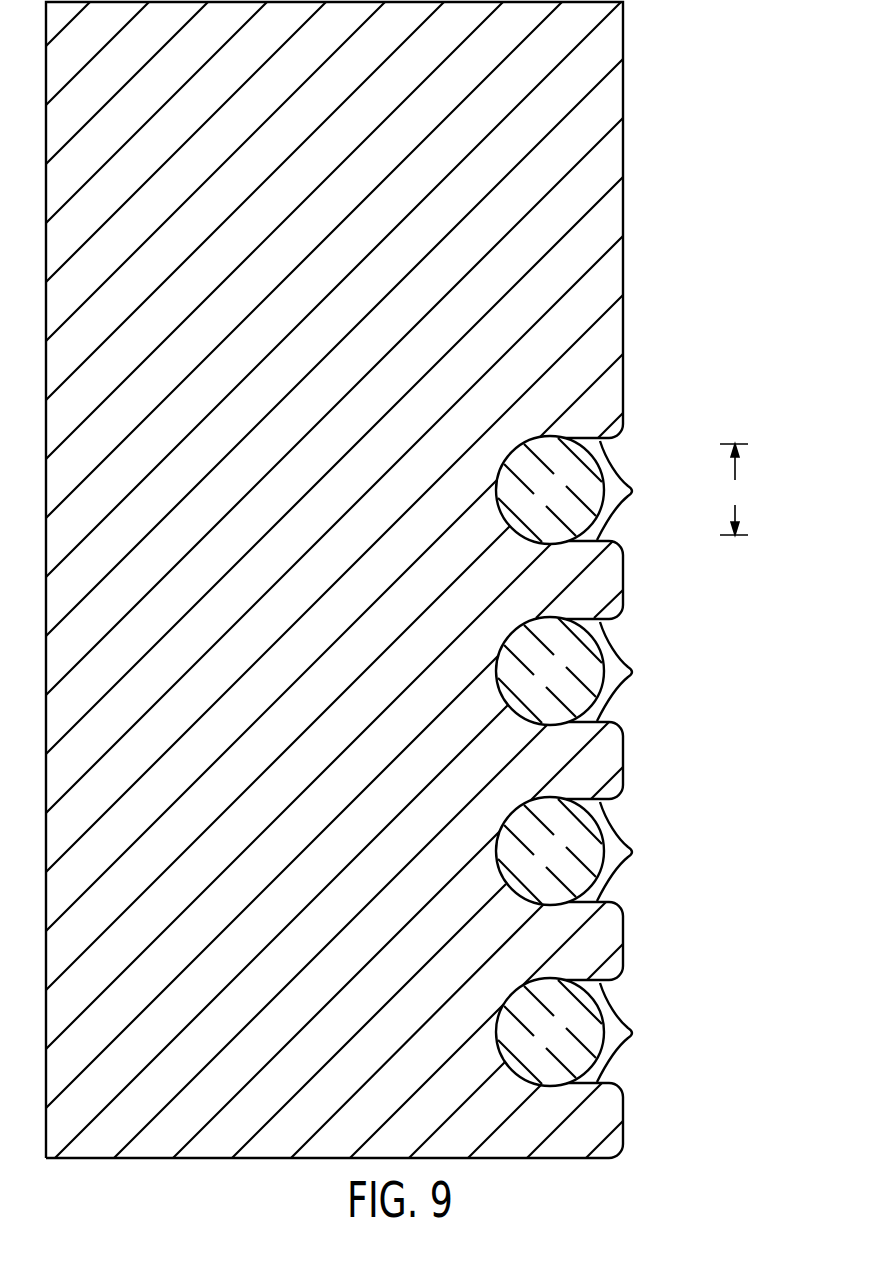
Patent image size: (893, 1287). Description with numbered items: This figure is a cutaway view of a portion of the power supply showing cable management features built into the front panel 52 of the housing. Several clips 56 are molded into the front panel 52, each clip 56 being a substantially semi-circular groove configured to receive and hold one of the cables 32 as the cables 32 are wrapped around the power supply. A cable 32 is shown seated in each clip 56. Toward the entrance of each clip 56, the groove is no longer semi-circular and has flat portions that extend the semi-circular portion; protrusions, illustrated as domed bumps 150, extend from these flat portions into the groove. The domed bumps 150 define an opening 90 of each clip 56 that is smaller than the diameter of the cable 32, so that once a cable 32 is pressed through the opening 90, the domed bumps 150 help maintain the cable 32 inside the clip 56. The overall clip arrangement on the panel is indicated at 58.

The seal assembly 58 is at (404, 579).
The front panel 52 is at (623, 212).
The cables 32 is at (563, 503).
The domed bumps 150 is at (651, 1033).
The clips 56 is at (641, 534).
The opening 90 is at (734, 489).